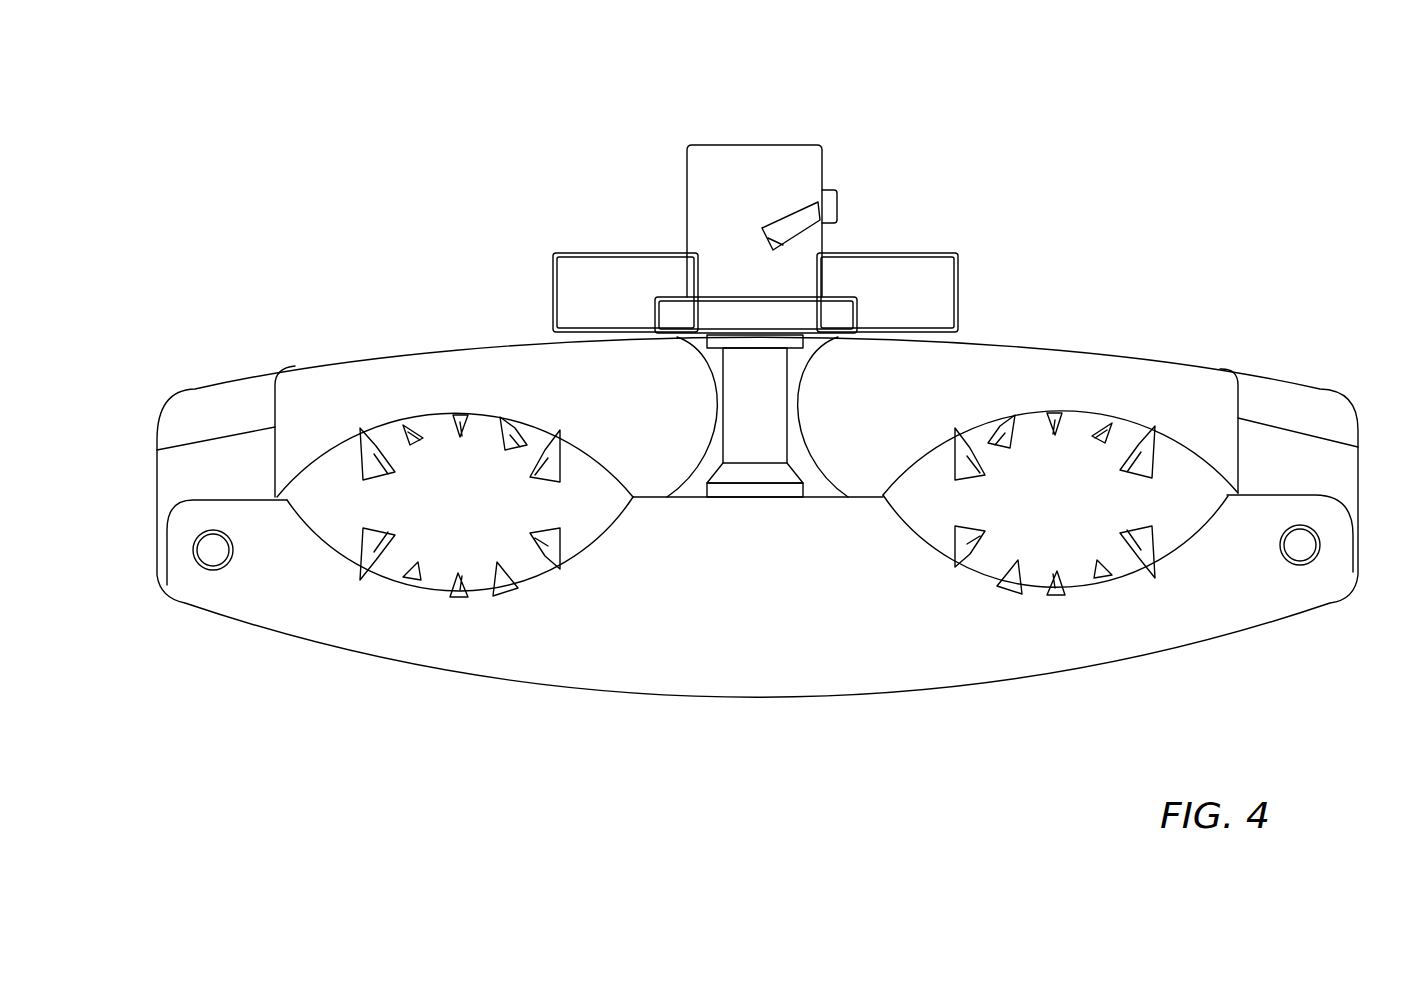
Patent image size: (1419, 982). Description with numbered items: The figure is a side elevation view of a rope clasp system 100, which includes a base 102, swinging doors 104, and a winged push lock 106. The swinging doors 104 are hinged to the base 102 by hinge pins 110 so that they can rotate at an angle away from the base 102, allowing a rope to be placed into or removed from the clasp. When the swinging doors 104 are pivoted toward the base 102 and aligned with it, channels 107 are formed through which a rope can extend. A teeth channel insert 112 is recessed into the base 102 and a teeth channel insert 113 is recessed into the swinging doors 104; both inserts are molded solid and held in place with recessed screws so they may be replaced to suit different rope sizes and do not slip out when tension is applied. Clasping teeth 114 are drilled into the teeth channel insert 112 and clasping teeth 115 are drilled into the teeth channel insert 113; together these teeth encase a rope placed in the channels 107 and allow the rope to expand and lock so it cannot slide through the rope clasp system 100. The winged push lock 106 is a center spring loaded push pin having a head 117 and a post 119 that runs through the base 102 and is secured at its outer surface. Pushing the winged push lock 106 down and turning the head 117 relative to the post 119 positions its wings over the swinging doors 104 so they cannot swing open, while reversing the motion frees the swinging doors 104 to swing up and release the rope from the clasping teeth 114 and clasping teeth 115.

The rope clasp system 100 is at (1117, 187).
The base 102 is at (767, 662).
The swinging doors 104 is at (345, 383).
The winged push lock 106 is at (763, 163).
The channels 107 is at (510, 517).
The hinge pins 110 is at (210, 553).
The teeth channel insert 112 is at (375, 560).
The teeth channel insert 113 is at (383, 430).
The clasping teeth 114 is at (500, 593).
The clasping teeth 115 is at (510, 420).
The head 117 is at (710, 170).
The post 119 is at (763, 380).